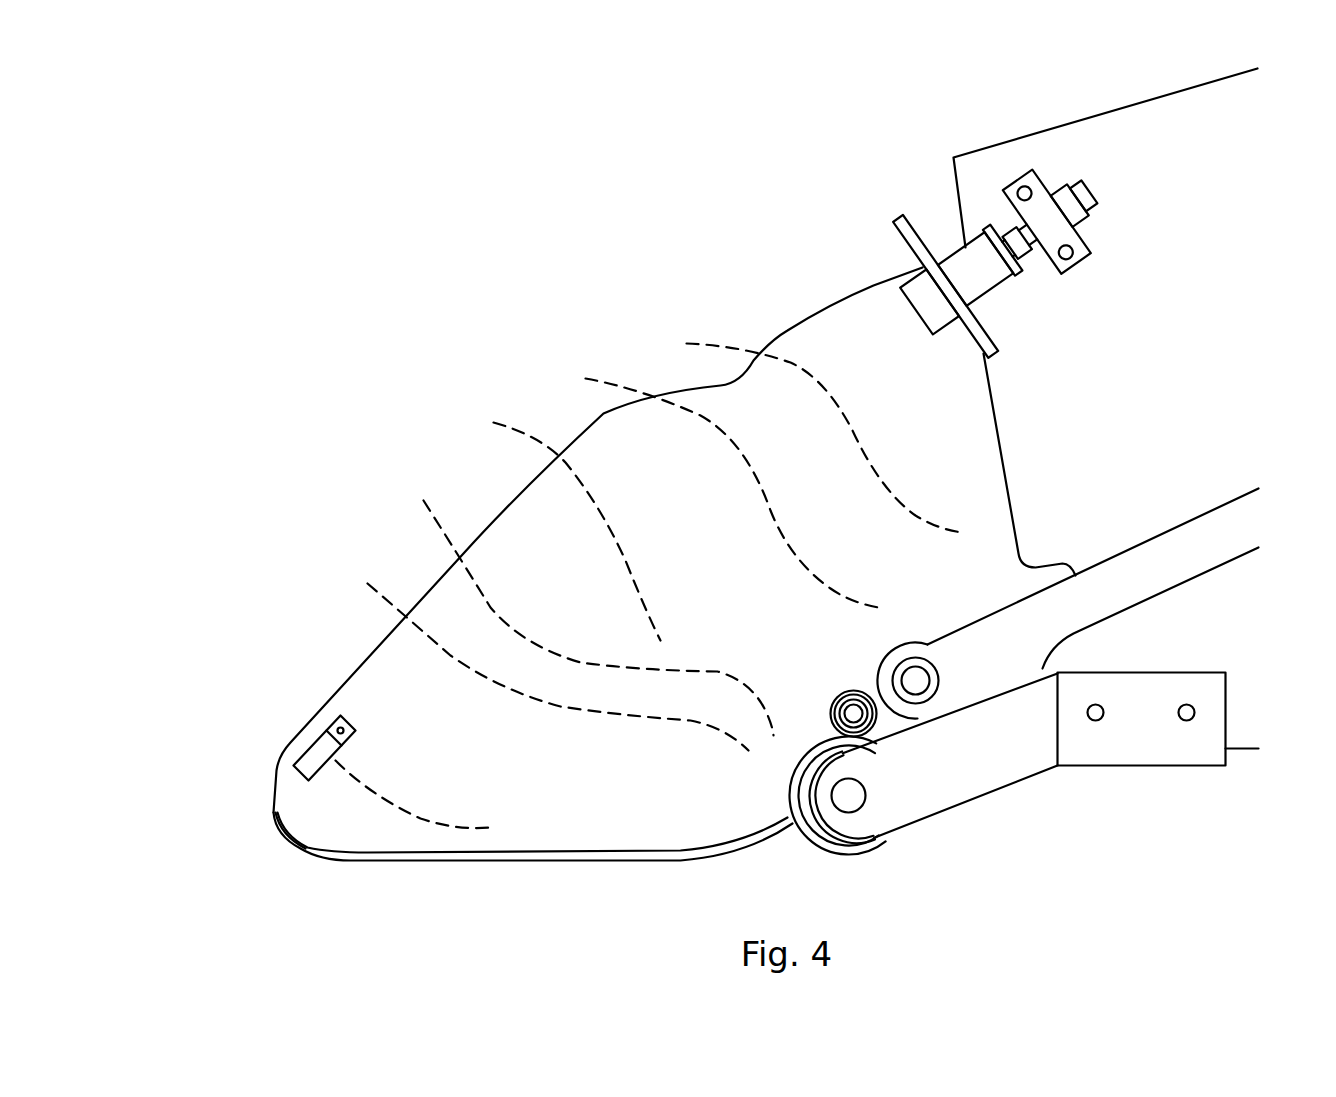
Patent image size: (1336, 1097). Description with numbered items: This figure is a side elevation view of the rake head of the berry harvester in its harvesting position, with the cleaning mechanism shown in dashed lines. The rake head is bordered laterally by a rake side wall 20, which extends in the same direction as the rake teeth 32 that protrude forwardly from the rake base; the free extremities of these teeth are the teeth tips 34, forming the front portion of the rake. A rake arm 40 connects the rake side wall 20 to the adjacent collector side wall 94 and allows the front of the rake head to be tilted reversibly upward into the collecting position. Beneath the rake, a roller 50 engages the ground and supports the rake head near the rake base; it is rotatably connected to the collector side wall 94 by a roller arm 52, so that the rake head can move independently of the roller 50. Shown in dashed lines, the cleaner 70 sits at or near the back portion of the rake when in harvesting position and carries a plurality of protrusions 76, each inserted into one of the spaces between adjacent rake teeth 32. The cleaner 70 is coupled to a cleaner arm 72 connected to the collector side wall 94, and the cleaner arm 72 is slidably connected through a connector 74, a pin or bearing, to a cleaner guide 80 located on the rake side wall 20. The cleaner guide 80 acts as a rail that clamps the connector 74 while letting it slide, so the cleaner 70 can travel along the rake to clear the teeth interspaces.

The rake side wall 20 is at (675, 564).
The collector side wall 94 is at (1062, 223).
The rake arm 40 is at (1067, 604).
The roller arm 52 is at (1034, 758).
The roller 50 is at (890, 842).
The rake teeth 32 is at (303, 727).
The teeth tips 34 is at (275, 832).
The cleaner 70 is at (539, 657).
The cleaner arm 72 is at (807, 431).
The connector 74 is at (714, 482).
The protrusions 76 is at (586, 600).
The cleaner guide 80 is at (558, 520).